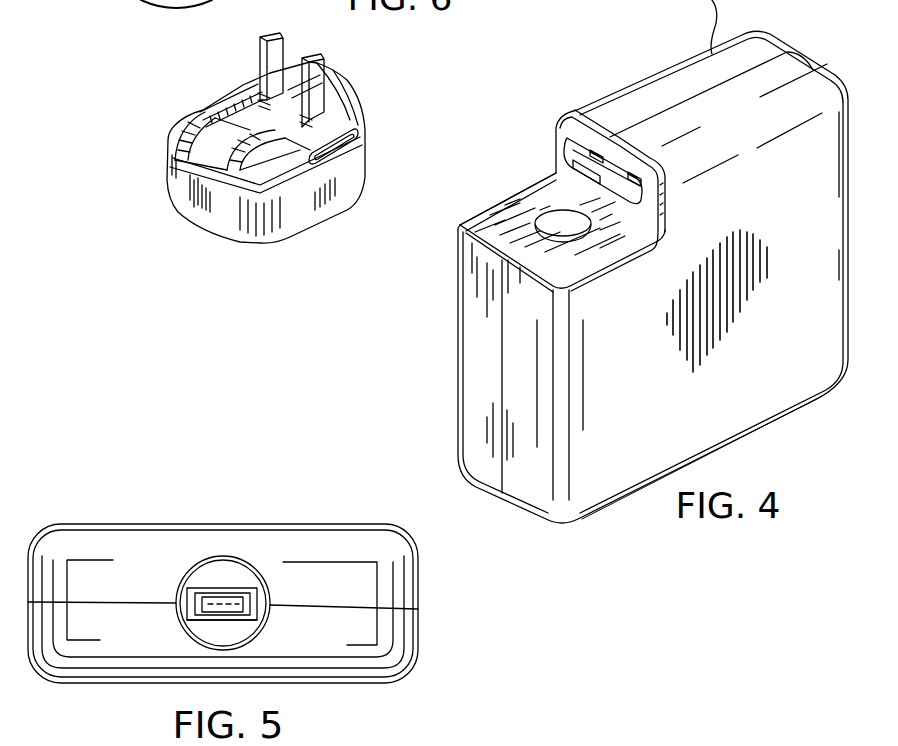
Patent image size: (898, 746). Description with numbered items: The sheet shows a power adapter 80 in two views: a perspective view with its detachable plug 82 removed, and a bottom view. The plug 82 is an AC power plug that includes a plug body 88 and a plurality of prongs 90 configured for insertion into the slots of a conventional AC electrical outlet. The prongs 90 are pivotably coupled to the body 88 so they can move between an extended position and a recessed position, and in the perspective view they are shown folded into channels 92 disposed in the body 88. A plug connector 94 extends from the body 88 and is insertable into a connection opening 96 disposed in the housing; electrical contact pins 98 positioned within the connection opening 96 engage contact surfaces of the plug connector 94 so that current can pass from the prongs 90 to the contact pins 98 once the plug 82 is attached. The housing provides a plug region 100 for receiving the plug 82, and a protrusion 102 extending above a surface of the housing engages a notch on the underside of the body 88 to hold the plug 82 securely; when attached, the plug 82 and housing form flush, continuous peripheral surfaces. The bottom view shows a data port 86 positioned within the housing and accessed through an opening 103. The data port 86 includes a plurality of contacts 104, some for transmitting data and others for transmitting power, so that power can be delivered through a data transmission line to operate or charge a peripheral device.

In FIG. 4, the power adapter 80 is at (600, 0).
In FIG. 5, the power adapter 80 is at (212, 506).
In FIG. 4, the plug 82 is at (213, 218).
In FIG. 5, the data port 86 is at (210, 622).
In FIG. 4, the plug body 88 is at (180, 173).
In FIG. 4, the prongs 90 is at (258, 62).
In FIG. 4, the channels 92 is at (202, 110).
In FIG. 4, the plug connector 94 is at (363, 90).
In FIG. 4, the connection opening 96 is at (557, 133).
In FIG. 4, the electrical contact pins 98 is at (603, 152).
In FIG. 4, the plug region 100 is at (460, 228).
In FIG. 4, the protrusion 102 is at (556, 216).
In FIG. 5, the opening 103 is at (232, 575).
In FIG. 5, the contacts 104 is at (207, 595).